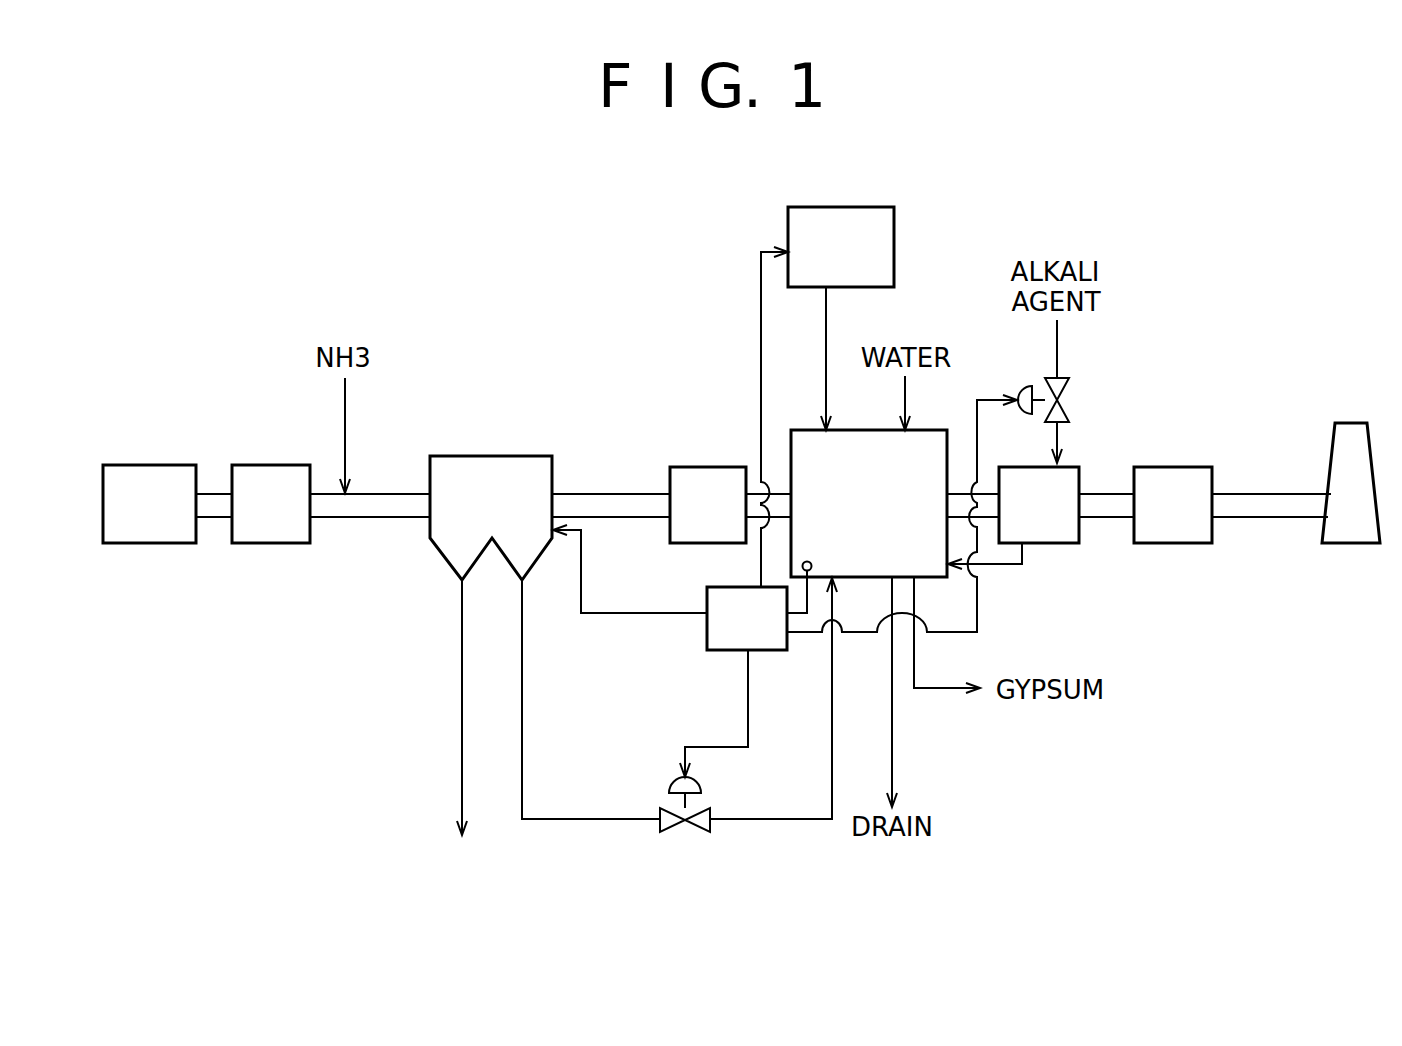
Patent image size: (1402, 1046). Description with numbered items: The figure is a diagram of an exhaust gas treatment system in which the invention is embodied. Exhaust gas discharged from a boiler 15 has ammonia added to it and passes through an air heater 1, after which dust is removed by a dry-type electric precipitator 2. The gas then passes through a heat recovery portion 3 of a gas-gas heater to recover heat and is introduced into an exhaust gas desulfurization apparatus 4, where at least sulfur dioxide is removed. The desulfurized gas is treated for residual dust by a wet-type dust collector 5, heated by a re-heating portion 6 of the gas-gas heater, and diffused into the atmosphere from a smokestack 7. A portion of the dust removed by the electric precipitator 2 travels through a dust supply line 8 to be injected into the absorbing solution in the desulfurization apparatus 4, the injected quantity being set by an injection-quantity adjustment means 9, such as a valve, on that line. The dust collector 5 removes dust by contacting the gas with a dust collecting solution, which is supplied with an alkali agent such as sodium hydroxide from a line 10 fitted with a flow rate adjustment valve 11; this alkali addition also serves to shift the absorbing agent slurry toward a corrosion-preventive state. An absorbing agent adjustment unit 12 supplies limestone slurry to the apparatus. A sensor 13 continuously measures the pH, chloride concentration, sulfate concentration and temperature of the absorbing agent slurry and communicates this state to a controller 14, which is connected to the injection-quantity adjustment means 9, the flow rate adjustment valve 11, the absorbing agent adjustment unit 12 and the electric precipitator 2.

The air heater 1 is at (276, 544).
The electric precipitator 2 is at (485, 455).
The heat recovery portion 3 is at (700, 466).
The exhaust gas desulfurization apparatus 4 is at (805, 430).
The wet-type dust collector 5 is at (1052, 546).
The re-heating portion 6 is at (1176, 546).
The smokestack 7 is at (1332, 442).
The dust supply line 8 is at (568, 822).
The injection-quantity adjustment means 9 is at (687, 828).
The line 10 is at (1057, 357).
The flow rate adjustment valve 11 is at (1067, 405).
The absorbing agent adjustment unit 12 is at (894, 215).
The sensor 13 is at (800, 567).
The controller 14 is at (707, 652).
The boiler 15 is at (146, 544).